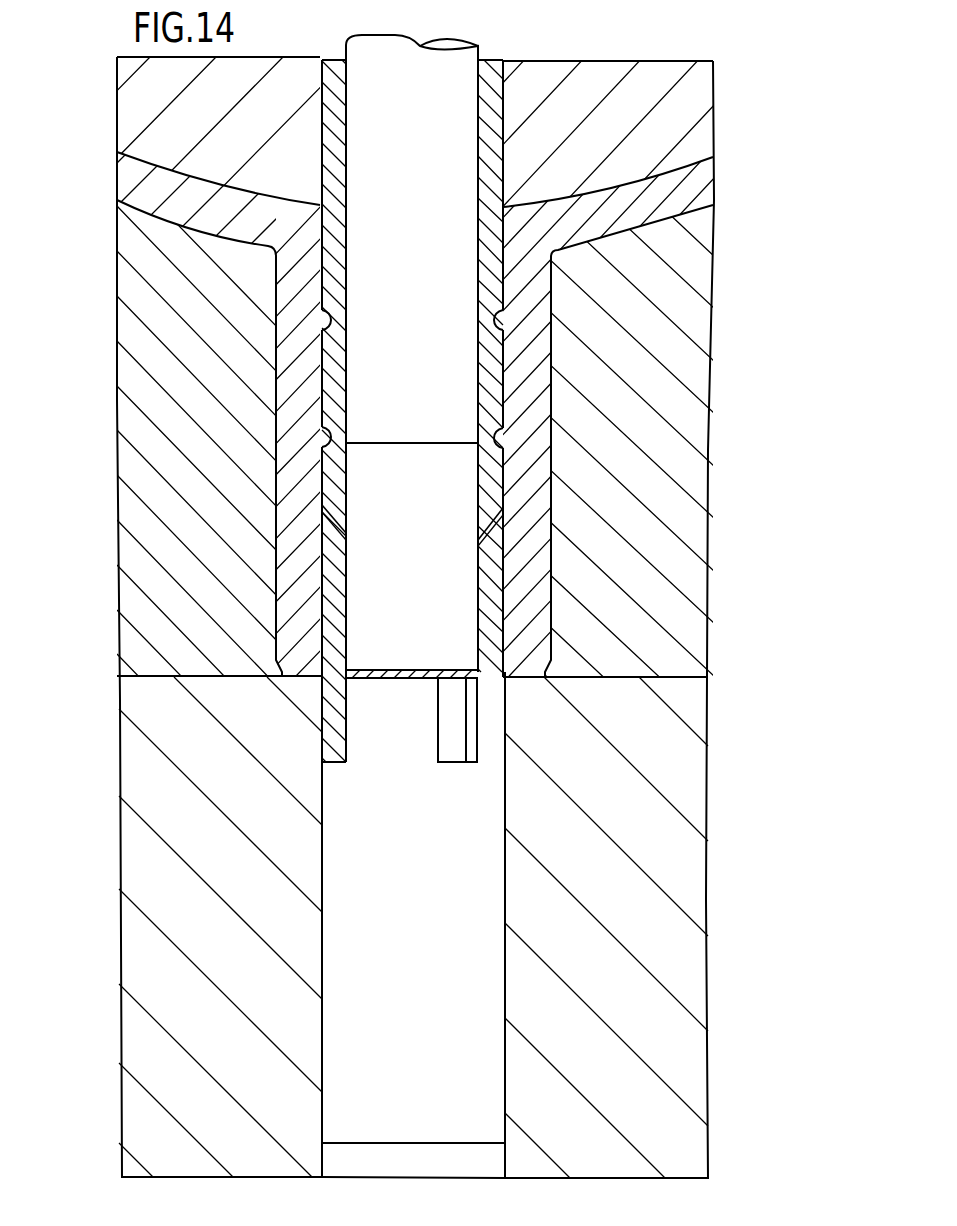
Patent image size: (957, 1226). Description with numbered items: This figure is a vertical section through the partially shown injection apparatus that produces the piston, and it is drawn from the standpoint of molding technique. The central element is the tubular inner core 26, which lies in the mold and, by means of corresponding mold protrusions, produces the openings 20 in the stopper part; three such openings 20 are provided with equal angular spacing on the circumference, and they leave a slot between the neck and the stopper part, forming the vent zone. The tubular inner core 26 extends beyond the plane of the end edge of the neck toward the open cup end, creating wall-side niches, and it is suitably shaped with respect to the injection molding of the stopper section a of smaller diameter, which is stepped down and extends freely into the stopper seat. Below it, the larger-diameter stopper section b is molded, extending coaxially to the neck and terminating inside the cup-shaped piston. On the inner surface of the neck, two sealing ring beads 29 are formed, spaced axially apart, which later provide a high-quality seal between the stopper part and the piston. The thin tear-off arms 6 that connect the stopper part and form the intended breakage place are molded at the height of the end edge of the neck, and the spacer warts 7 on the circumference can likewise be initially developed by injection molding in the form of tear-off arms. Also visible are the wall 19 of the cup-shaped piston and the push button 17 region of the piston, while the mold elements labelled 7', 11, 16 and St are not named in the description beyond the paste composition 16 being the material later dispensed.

The tear-off arms 6 is at (693, 186).
The spacer warts 7 is at (424, 496).
The insert sleeve lower face 7' is at (646, 780).
The separating plate 11 is at (407, 678).
The paste composition 16 is at (333, 695).
The push button 17 is at (450, 745).
The wall 19 is at (320, 520).
The openings 20 is at (345, 542).
The tubular inner core 26 is at (493, 373).
The sealing ring beads 29 is at (318, 327).
The plunger rod St is at (383, 865).
The stopper section a is at (405, 548).
The stopper section b is at (405, 955).